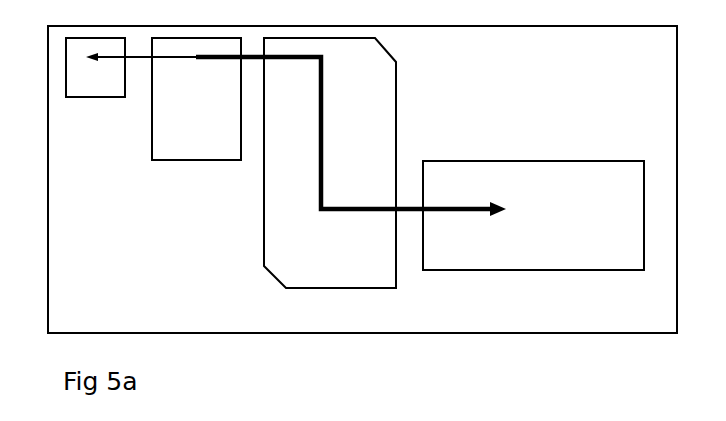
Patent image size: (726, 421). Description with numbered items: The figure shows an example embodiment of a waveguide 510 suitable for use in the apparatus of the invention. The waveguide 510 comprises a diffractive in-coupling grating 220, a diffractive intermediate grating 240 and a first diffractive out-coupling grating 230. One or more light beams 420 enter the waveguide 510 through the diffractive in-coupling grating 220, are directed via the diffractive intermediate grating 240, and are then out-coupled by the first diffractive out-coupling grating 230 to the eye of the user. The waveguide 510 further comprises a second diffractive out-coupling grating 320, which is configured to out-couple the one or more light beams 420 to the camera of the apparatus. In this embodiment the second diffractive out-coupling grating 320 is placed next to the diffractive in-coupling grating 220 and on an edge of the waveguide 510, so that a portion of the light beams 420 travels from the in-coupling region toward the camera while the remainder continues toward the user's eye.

The waveguide 510 is at (362, 168).
The second diffractive out-coupling grating 320 is at (95, 67).
The diffractive in-coupling grating 220 is at (196, 99).
The diffractive intermediate grating 240 is at (330, 163).
The first diffractive out-coupling grating 230 is at (533, 215).
The light beams 420 is at (331, 80).